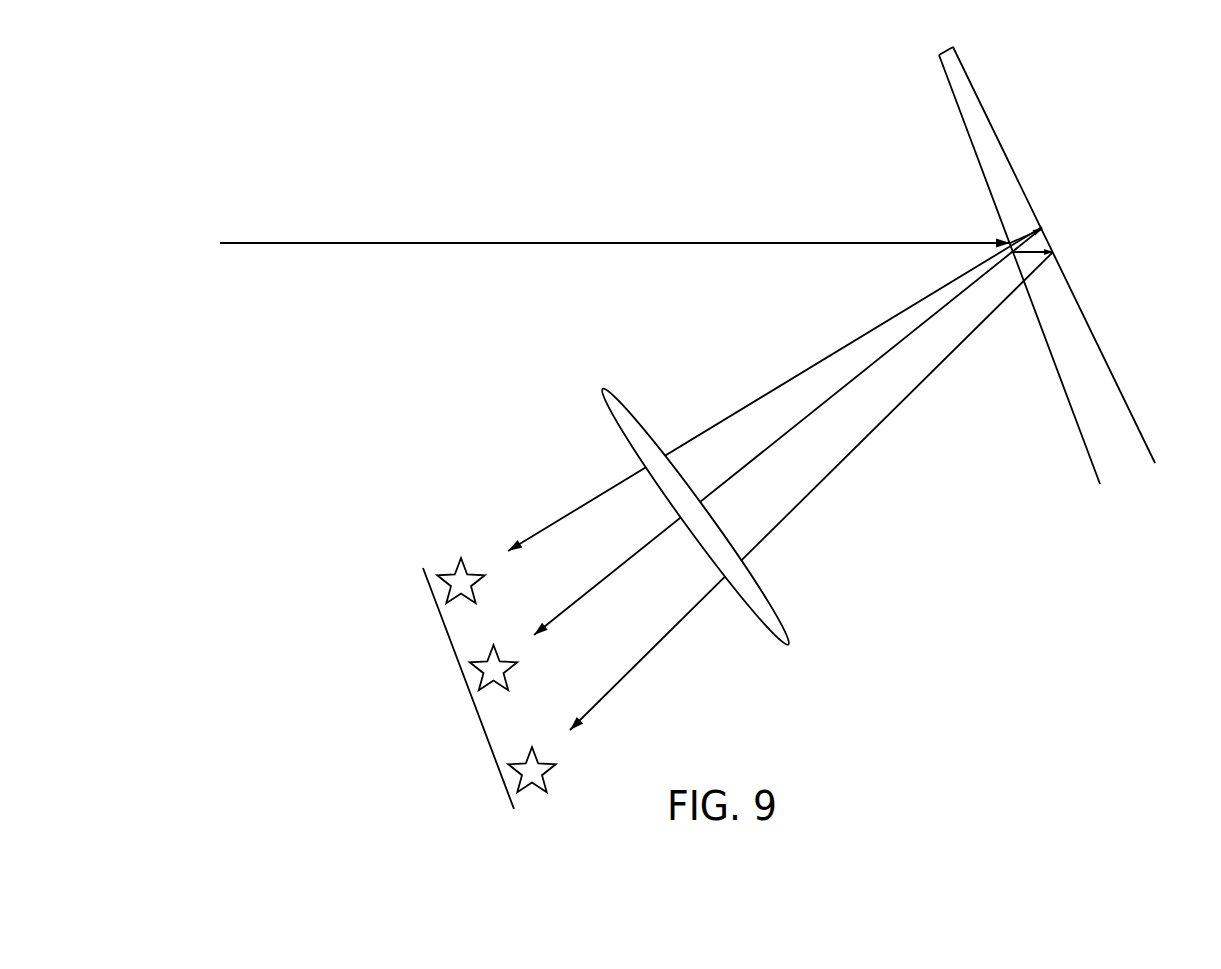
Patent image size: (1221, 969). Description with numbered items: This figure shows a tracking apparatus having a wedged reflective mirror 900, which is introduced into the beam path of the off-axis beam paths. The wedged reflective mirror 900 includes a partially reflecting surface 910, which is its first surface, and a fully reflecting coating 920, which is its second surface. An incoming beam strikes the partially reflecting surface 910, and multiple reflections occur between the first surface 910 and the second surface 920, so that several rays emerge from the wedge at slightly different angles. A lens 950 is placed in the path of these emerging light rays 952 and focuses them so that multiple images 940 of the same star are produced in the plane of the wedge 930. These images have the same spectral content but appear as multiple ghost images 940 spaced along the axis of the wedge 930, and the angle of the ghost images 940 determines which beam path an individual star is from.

The tracking apparatus having a wedged reflective mirror 900 is at (311, 163).
The partially reflecting surface 910 is at (952, 95).
The fully reflecting coating 920 is at (1138, 424).
The plane of the wedge 930 is at (470, 689).
The ghost images 940 is at (452, 574).
The lens 950 is at (780, 609).
The emerging light rays 952 is at (889, 415).